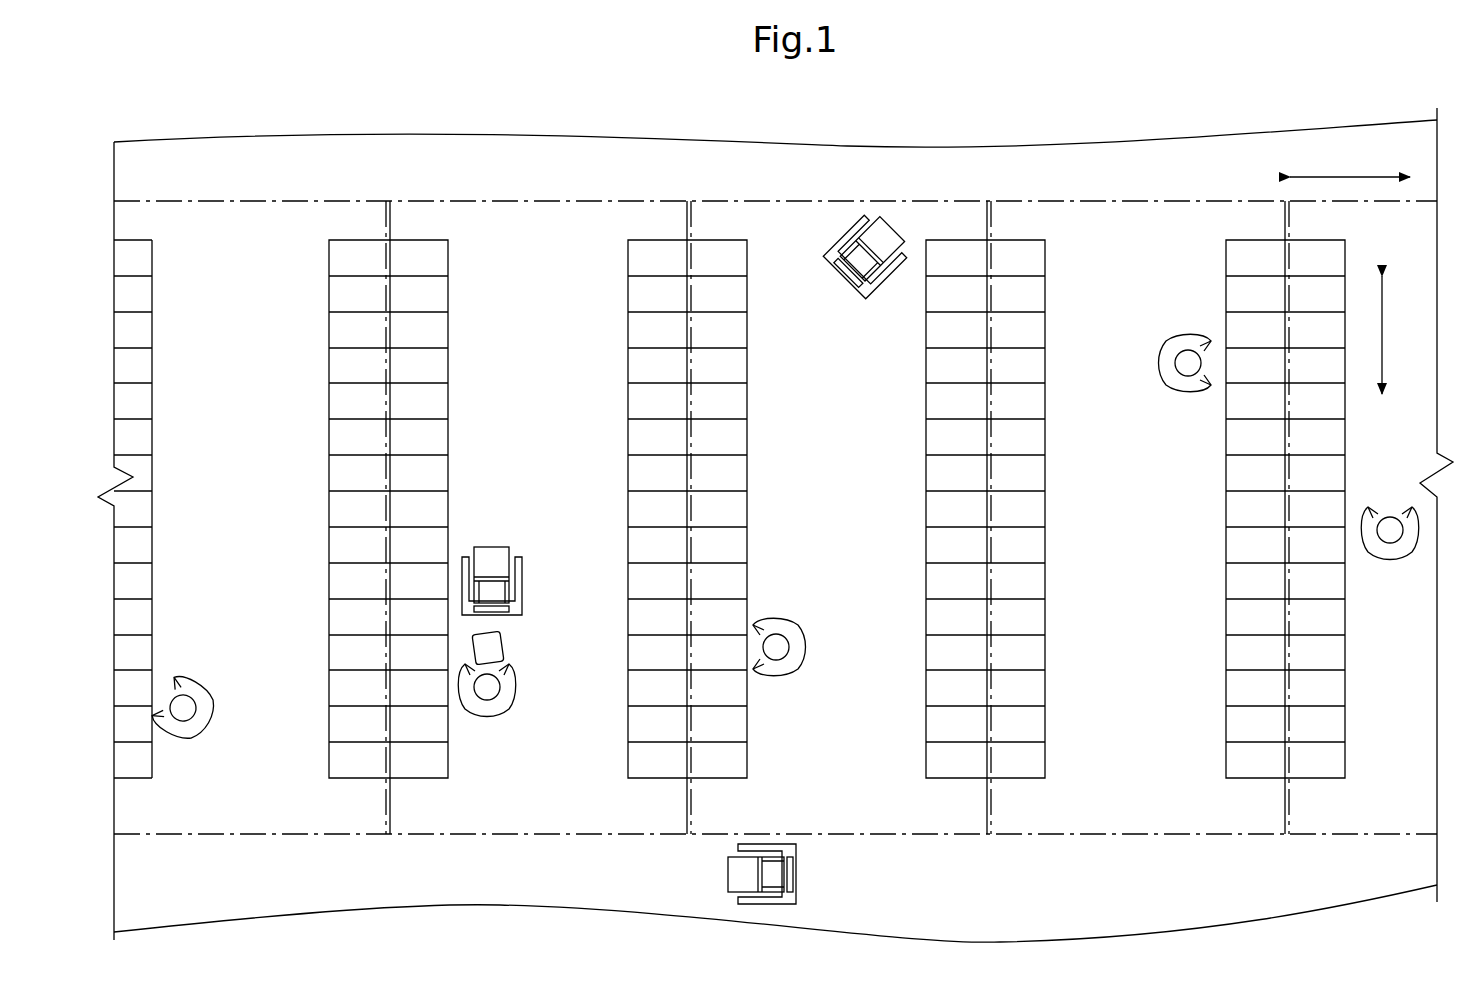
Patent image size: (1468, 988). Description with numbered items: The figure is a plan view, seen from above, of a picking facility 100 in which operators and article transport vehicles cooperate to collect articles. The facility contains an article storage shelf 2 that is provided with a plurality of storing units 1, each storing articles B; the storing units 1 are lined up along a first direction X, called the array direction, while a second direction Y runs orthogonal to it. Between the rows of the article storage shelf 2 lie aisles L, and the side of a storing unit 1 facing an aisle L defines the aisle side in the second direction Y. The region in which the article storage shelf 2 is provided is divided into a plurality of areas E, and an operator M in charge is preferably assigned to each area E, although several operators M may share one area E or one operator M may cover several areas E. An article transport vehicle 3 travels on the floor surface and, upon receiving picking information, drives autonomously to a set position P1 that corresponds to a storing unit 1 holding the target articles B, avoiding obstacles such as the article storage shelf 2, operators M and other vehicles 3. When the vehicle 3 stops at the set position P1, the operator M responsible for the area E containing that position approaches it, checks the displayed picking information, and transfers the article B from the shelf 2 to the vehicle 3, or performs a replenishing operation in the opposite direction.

The picking facility 100 is at (885, 125).
The storing unit 1 is at (433, 333).
The article storage shelf 2 is at (170, 488).
The article transport vehicle 3 is at (878, 282).
The article B is at (505, 633).
The set position P1 is at (524, 540).
The operator M is at (188, 688).
The aisle L is at (250, 298).
The area E is at (215, 834).
The first direction X is at (1395, 335).
The second direction Y is at (1350, 163).